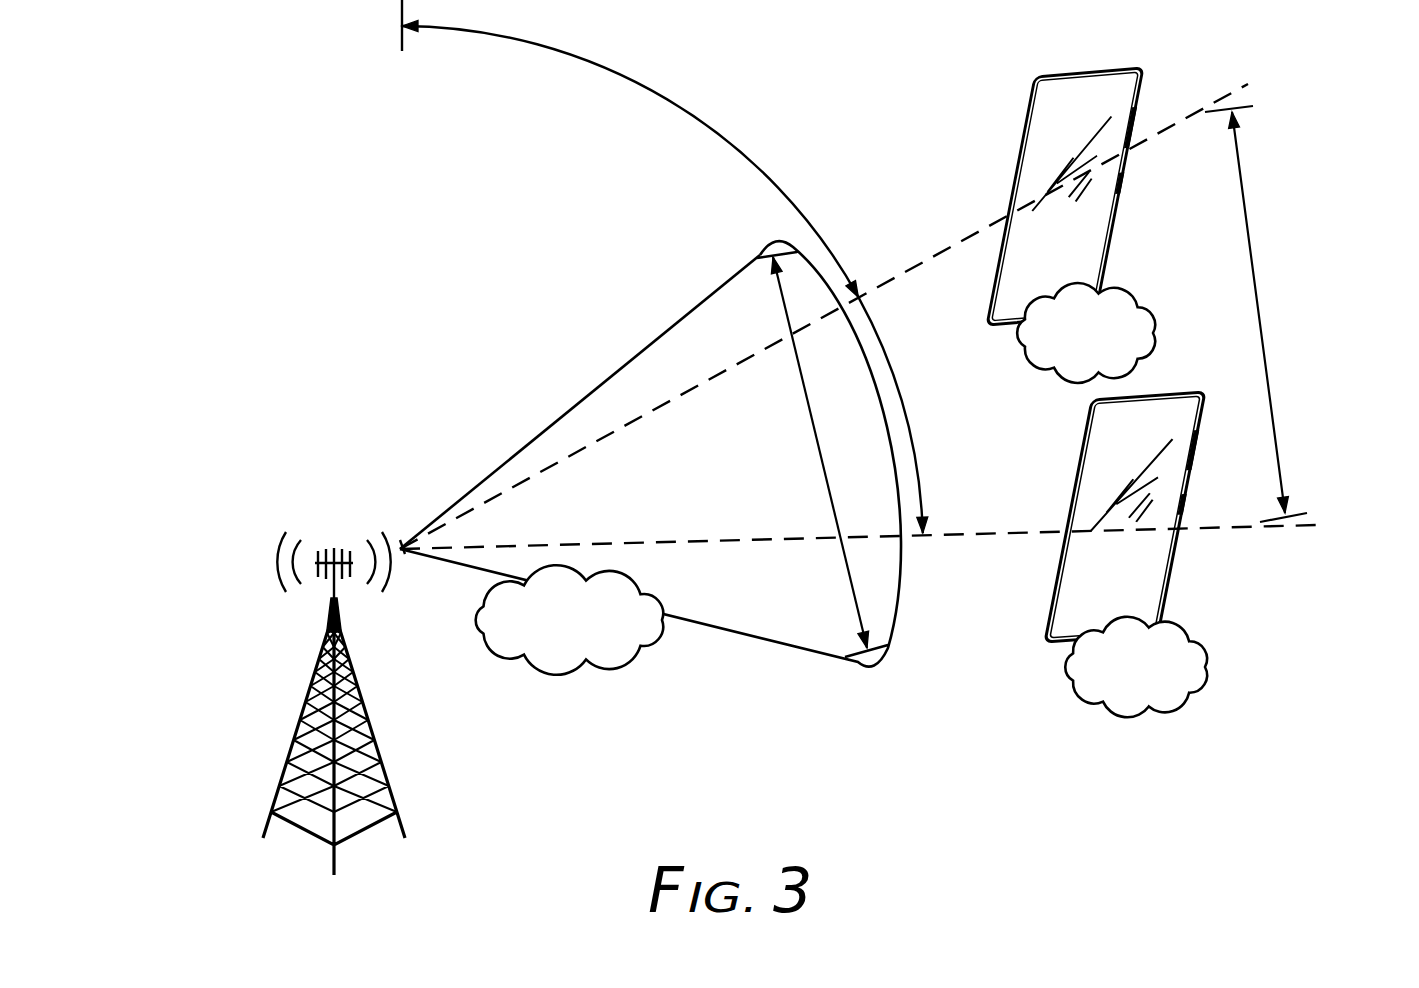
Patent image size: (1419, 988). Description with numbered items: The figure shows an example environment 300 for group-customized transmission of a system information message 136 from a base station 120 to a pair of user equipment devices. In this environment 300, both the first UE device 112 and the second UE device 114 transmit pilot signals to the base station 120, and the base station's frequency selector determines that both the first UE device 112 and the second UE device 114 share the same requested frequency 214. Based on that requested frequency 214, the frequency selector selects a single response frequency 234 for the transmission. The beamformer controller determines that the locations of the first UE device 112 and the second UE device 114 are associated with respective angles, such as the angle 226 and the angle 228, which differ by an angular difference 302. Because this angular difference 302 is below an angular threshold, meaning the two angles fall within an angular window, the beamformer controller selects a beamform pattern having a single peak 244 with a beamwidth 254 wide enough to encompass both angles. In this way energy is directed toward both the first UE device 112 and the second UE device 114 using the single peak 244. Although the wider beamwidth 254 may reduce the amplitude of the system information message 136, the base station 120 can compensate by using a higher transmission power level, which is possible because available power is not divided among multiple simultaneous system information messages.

The first UE device 112 is at (1108, 68).
The second UE device 114 is at (1150, 392).
The base station 120 is at (312, 697).
The system information message 136 is at (693, 710).
The requested frequency 214 is at (1112, 500).
The angle 226 is at (707, 122).
The angle 228 is at (922, 463).
The response frequency 234 is at (569, 620).
The peak 244 is at (558, 422).
The beamwidth 254 is at (822, 458).
The environment 300 is at (177, 817).
The angular difference 302 is at (1258, 313).